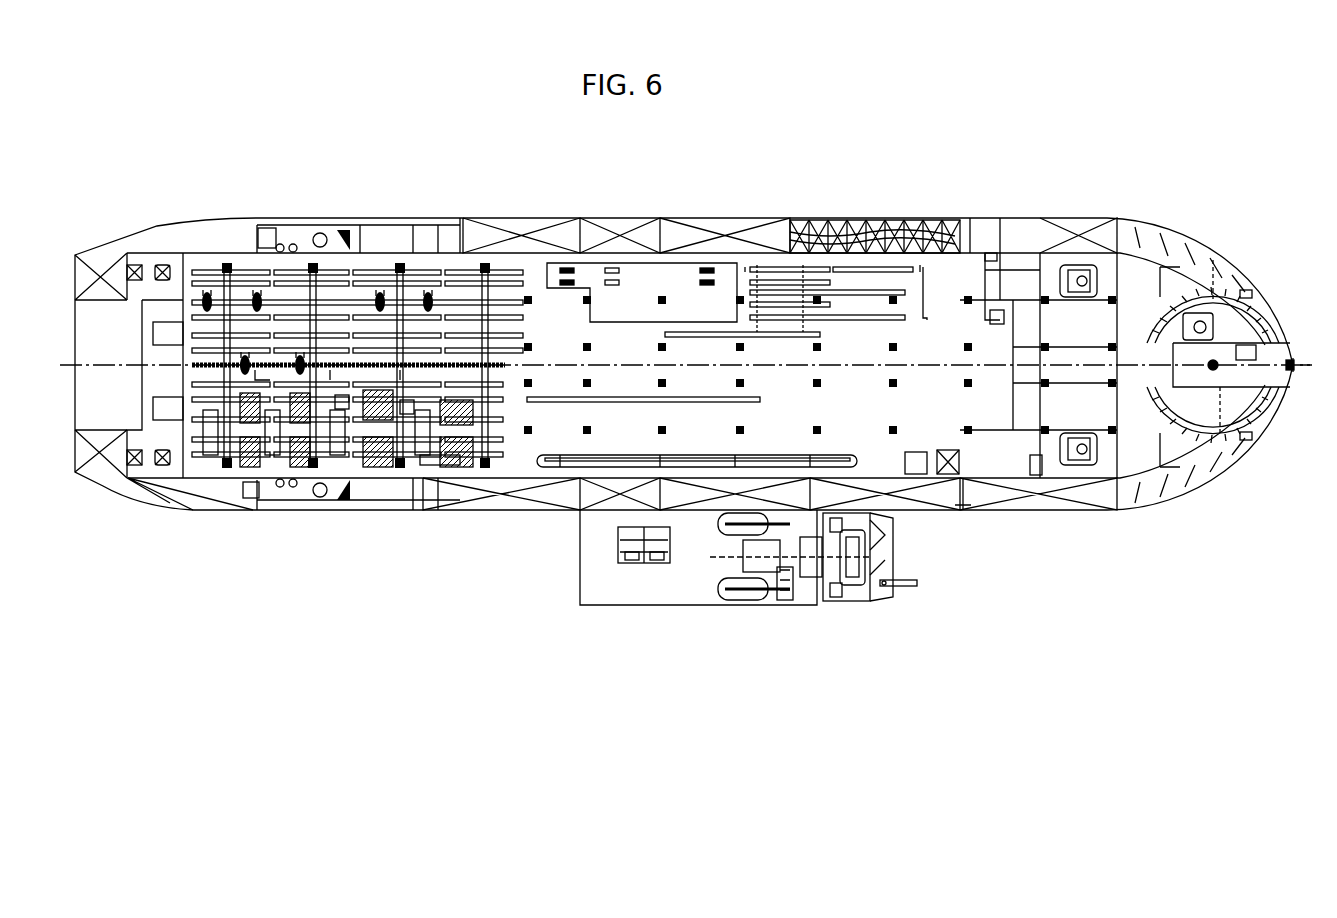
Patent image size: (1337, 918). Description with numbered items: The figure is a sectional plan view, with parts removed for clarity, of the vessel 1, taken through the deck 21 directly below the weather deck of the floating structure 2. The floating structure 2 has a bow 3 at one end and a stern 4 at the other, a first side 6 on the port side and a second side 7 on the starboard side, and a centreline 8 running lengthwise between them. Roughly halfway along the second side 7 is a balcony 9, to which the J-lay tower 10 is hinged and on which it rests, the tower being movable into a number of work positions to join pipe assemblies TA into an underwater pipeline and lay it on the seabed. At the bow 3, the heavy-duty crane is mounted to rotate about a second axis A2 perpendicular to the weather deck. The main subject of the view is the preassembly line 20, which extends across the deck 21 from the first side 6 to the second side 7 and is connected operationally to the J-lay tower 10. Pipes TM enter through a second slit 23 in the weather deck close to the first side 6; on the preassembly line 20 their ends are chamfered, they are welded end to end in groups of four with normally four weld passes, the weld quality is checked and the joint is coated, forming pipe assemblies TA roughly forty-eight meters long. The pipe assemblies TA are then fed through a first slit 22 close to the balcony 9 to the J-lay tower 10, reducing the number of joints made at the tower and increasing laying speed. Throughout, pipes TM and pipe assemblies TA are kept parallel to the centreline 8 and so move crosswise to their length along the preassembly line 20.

The vessel 1 is at (1117, 147).
The floating structure 2 is at (1137, 237).
The bow 3 is at (1258, 247).
The stern 4 is at (124, 518).
The first side 6 is at (886, 212).
The second side 7 is at (964, 518).
The centreline 8 is at (1313, 352).
The balcony 9 is at (616, 598).
The J-lay tower 10 is at (843, 612).
The preassembly line 20 is at (600, 312).
The deck 21 is at (985, 450).
The first slit 22 is at (876, 458).
The second slit 23 is at (928, 272).
The pipes TM is at (865, 268).
The pipe assemblies TA is at (193, 349).
The second axis A2 is at (1230, 432).